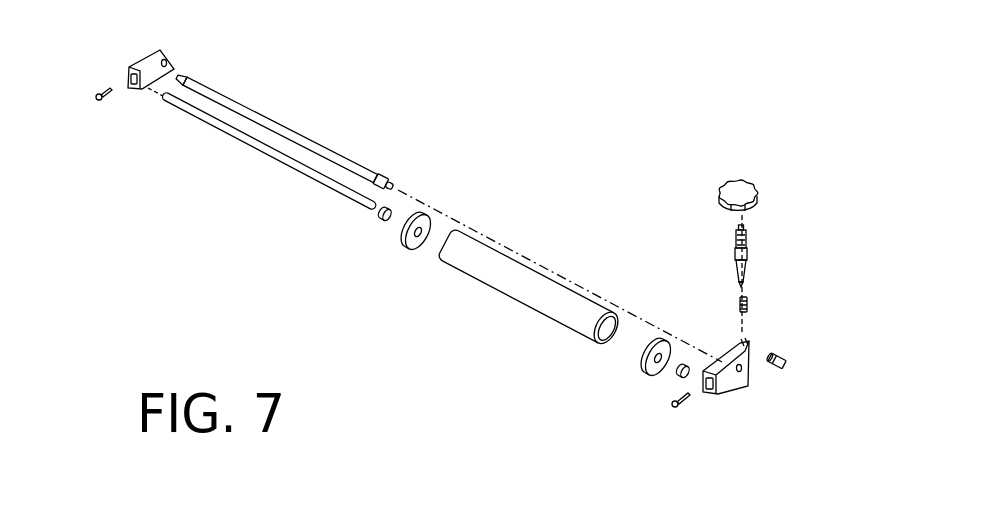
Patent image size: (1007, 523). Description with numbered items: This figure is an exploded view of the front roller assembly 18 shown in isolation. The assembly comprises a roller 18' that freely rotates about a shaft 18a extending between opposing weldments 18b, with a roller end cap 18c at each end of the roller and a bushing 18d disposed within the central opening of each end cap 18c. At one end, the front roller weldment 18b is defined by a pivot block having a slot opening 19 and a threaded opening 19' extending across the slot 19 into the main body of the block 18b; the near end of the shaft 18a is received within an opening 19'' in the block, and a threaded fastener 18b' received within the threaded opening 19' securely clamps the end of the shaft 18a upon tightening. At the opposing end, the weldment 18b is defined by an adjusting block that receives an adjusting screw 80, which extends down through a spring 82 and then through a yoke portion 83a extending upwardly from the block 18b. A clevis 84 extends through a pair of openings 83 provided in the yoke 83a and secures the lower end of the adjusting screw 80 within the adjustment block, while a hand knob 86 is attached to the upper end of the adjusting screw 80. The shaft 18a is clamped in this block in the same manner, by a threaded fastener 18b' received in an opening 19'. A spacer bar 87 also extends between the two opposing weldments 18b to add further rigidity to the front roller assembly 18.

The front roller assembly 18 is at (445, 218).
The roller 18' is at (530, 313).
The shaft 18a is at (259, 158).
The front roller weldment 18b is at (450, 246).
The threaded fastener 18b' is at (402, 290).
The roller end cap 18c is at (407, 252).
The bushing 18d is at (380, 222).
The slot opening 19 is at (413, 184).
The threaded opening 19' is at (381, 251).
The opening 19'' is at (155, 123).
The adjusting screw 80 is at (753, 254).
The spring 82 is at (755, 307).
The openings 83 is at (752, 348).
The yoke portion 83a is at (757, 335).
The clevis 84 is at (790, 366).
The hand knob 86 is at (743, 176).
The spacer bar 87 is at (309, 132).